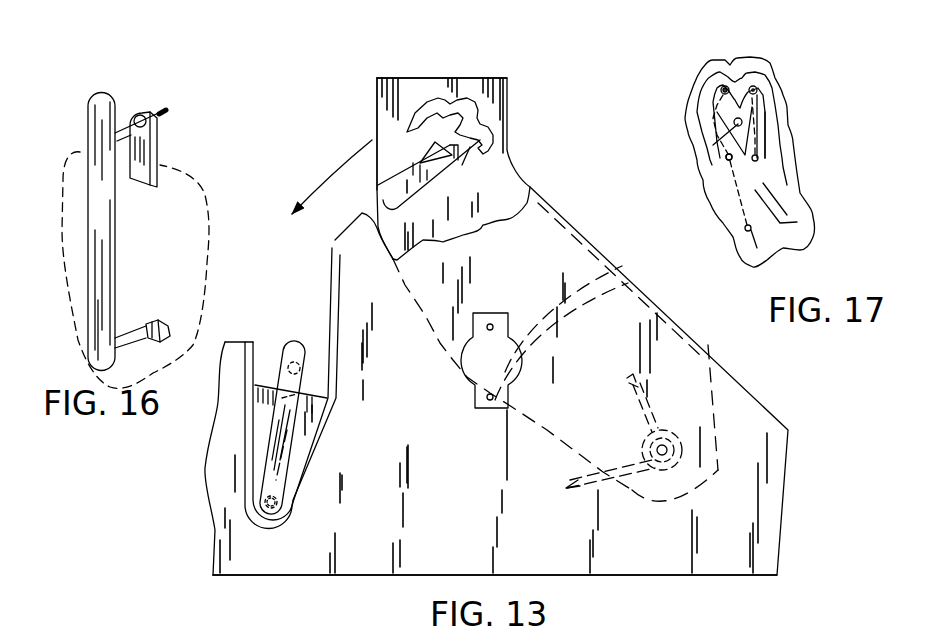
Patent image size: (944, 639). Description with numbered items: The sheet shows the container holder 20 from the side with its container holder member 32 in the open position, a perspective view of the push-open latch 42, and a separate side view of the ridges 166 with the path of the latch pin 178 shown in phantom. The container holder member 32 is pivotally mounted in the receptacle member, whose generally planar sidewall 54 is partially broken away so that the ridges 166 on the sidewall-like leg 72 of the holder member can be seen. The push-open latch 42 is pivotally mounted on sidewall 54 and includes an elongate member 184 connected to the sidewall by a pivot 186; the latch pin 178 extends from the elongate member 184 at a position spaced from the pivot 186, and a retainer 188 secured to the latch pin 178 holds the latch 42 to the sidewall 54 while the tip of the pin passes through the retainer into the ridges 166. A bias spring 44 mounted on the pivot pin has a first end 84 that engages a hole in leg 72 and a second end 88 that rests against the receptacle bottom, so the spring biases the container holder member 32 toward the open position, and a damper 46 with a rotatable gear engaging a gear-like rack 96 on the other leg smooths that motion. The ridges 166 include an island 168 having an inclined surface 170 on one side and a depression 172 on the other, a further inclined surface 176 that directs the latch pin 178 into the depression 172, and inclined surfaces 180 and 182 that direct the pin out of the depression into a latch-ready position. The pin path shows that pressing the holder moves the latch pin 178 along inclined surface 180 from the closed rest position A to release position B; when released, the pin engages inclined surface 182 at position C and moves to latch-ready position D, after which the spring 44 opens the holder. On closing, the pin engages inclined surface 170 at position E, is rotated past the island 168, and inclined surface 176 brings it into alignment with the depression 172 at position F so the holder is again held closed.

In FIG. 13, the container holder 20 is at (533, 82).
In FIG. 13, the container holder member 32 is at (418, 75).
In FIG. 13, the sidewall-like leg 72 is at (392, 78).
In FIG. 13, the ridges 166 is at (433, 100).
In FIG. 13, the island 168 is at (378, 187).
In FIG. 17, the island 168 is at (717, 125).
In FIG. 13, the depression 172 is at (462, 165).
In FIG. 13, the sidewall 54 is at (463, 527).
In FIG. 13, the push-open latch 42 is at (270, 461).
In FIG. 16, the push-open latch 42 is at (210, 158).
In FIG. 13, the latch pin 178 is at (295, 349).
In FIG. 16, the latch pin 178 is at (118, 120).
In FIG. 13, the elongate member 184 is at (287, 482).
In FIG. 16, the elongate member 184 is at (88, 278).
In FIG. 13, the pivot 186 is at (275, 507).
In FIG. 16, the pivot 186 is at (135, 320).
In FIG. 16, the retainer 188 is at (160, 150).
In FIG. 13, the damper 46 is at (473, 397).
In FIG. 13, the gear-like rack 96 is at (551, 308).
In FIG. 13, the bias spring 44 is at (672, 462).
In FIG. 13, the first end 84 is at (645, 396).
In FIG. 13, the second end 88 is at (596, 492).
In FIG. 17, the inclined surface 182 is at (793, 180).
In FIG. 17, the inclined surface 176 is at (722, 89).
In FIG. 17, the inclined surface 180 is at (743, 78).
In FIG. 17, the inclined surface 170 is at (724, 146).
In FIG. 17, the position F is at (724, 86).
In FIG. 17, the release position B is at (757, 88).
In FIG. 17, the closed rest position A is at (742, 122).
In FIG. 17, the position C is at (767, 155).
In FIG. 17, the position E is at (730, 167).
In FIG. 17, the latch-ready position D is at (745, 229).